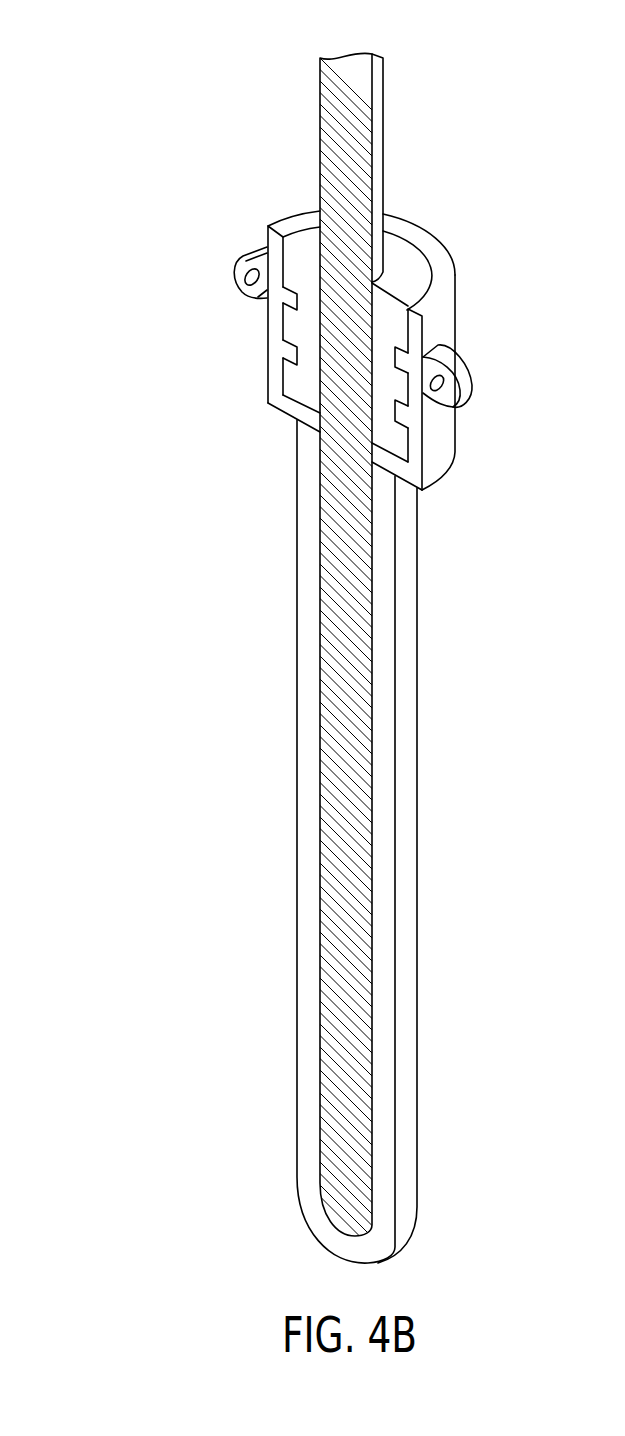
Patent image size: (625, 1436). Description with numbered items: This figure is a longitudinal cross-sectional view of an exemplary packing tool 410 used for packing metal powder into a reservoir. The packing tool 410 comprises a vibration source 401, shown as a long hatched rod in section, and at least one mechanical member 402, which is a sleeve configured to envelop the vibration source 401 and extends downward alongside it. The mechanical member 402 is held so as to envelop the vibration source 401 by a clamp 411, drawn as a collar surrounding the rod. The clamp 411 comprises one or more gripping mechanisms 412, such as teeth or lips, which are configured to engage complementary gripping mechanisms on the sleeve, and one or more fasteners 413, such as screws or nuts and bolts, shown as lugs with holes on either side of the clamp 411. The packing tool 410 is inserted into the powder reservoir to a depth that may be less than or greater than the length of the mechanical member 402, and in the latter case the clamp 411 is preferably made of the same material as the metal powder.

The packing tool 410 is at (104, 71).
The vibration source 401 is at (305, 95).
The mechanical member 402 is at (284, 733).
The clamp 411 is at (280, 204).
The gripping mechanisms 412 is at (285, 272).
The fasteners 413 is at (227, 305).